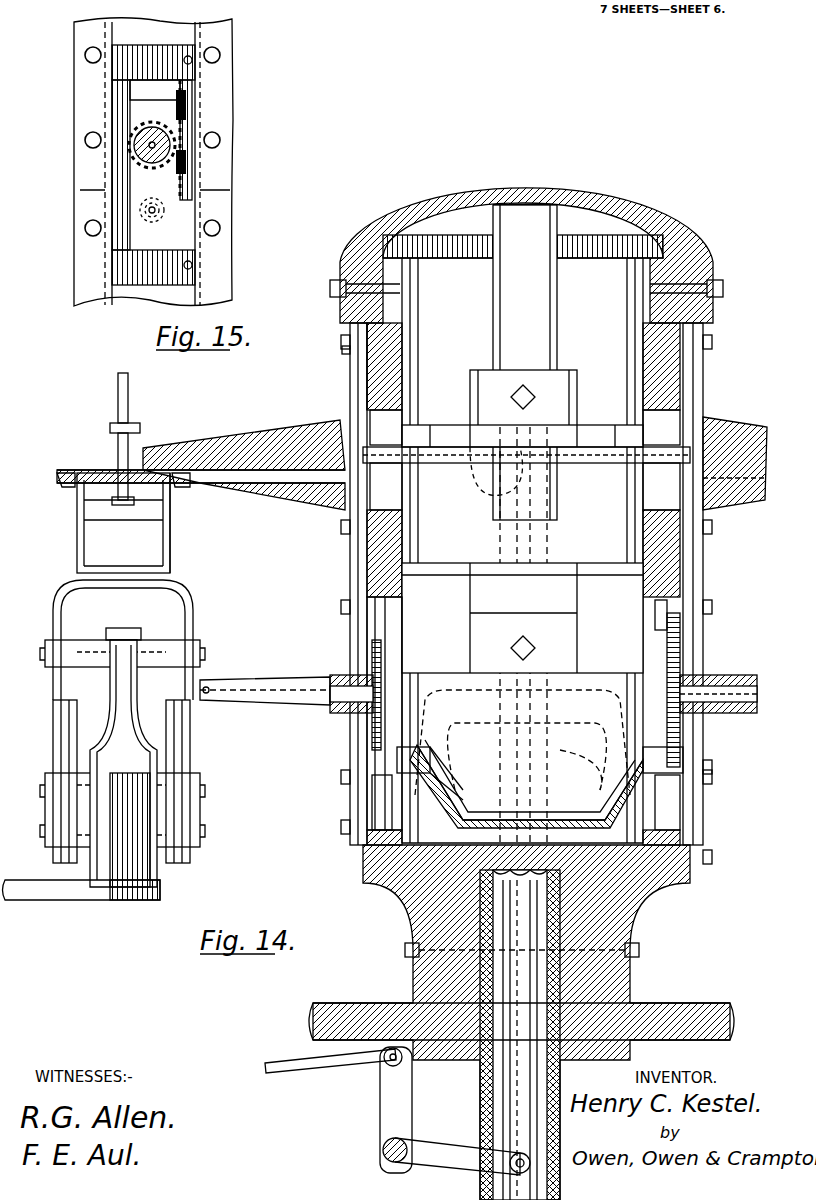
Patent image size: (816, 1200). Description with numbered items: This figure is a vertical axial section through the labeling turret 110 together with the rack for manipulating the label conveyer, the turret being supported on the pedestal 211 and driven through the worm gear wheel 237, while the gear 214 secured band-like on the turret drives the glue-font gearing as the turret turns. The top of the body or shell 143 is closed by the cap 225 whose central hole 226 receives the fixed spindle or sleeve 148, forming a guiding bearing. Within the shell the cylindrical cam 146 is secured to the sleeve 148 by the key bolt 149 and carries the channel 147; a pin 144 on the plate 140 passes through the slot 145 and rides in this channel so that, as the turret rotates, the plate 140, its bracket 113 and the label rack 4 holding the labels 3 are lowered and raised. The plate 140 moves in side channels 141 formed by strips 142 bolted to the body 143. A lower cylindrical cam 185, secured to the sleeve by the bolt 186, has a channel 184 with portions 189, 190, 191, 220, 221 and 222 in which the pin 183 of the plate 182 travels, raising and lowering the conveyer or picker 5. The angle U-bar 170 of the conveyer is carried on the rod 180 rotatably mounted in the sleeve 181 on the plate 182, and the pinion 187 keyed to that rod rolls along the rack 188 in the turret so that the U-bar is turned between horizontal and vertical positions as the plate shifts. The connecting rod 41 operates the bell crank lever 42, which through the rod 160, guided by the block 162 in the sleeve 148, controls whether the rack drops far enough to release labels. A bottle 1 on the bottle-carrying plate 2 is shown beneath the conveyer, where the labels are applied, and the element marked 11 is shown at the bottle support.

In FIG. 14, the bottle 1 is at (115, 705).
In FIG. 14, the bottle-carrying plate 2 is at (50, 895).
In FIG. 14, the label 3 is at (123, 473).
In FIG. 14, the label rack 4 is at (178, 523).
In FIG. 14, the conveyer or picker 5 is at (108, 751).
In FIG. 14, the bottle support 11 is at (125, 867).
In FIG. 14, the connecting rod 41 is at (310, 1075).
In FIG. 14, the bell crank lever 42 is at (380, 1108).
In FIG. 14, the turret 110 is at (736, 578).
In FIG. 14, the bracket 113 is at (752, 428).
In FIG. 14, the plate 140 is at (365, 405).
In FIG. 14, the side channel 141 is at (703, 552).
In FIG. 15, the strip 142 is at (215, 190).
In FIG. 14, the strip 142 is at (712, 766).
In FIG. 14, the body portion or shell 143 is at (668, 895).
In FIG. 14, the pin 144 is at (525, 427).
In FIG. 14, the slot 145 is at (526, 478).
In FIG. 14, the cylindrical cam 146 is at (598, 437).
In FIG. 14, the channel 147 is at (580, 455).
In FIG. 14, the spindle or sleeve 148 is at (555, 292).
In FIG. 14, the key bolt 149 is at (523, 385).
In FIG. 14, the rod 160 is at (537, 1118).
In FIG. 14, the block 162 is at (528, 452).
In FIG. 14, the angle U-bar 170 is at (145, 640).
In FIG. 15, the rod 180 is at (186, 160).
In FIG. 14, the rod 180 is at (730, 705).
In FIG. 15, the sleeve 181 is at (140, 140).
In FIG. 14, the sleeve 181 is at (275, 680).
In FIG. 14, the plate 182 is at (360, 630).
In FIG. 15, the pin 183 is at (165, 215).
In FIG. 14, the pin 183 is at (685, 785).
In FIG. 14, the channel 184 is at (575, 800).
In FIG. 14, the cylindrical cam 185 is at (600, 645).
In FIG. 14, the bolt 186 is at (522, 618).
In FIG. 15, the pinion 187 is at (190, 135).
In FIG. 14, the pinion 187 is at (690, 650).
In FIG. 15, the rack 188 is at (186, 110).
In FIG. 14, the rack 188 is at (690, 630).
In FIG. 14, the channel portion 189 is at (450, 745).
In FIG. 14, the channel portion 190 is at (430, 768).
In FIG. 14, the channel portion 191 is at (578, 765).
In FIG. 14, the supporting pedestal 211 is at (580, 1068).
In FIG. 14, the gear 214 is at (640, 950).
In FIG. 14, the channel portion 220 is at (595, 765).
In FIG. 14, the channel portion 221 is at (580, 725).
In FIG. 14, the channel portion 222 is at (430, 705).
In FIG. 14, the cap 225 is at (615, 205).
In FIG. 14, the central hole 226 is at (522, 185).
In FIG. 14, the worm gear wheel 237 is at (695, 993).